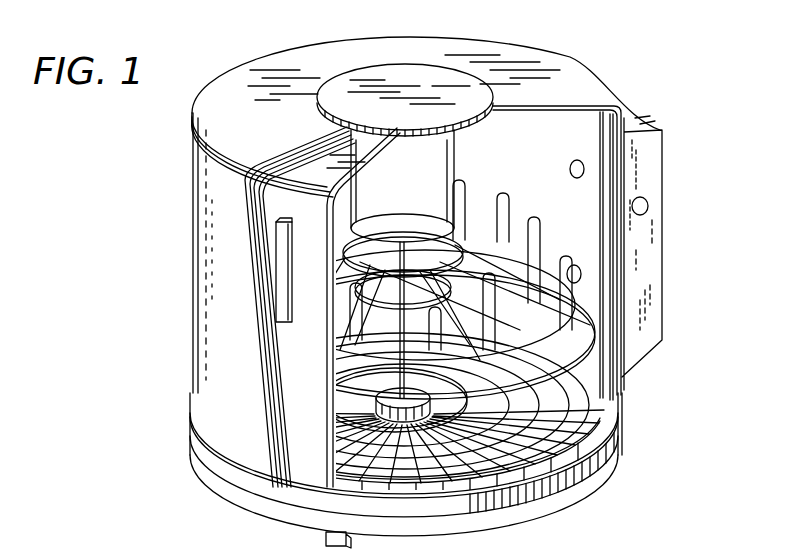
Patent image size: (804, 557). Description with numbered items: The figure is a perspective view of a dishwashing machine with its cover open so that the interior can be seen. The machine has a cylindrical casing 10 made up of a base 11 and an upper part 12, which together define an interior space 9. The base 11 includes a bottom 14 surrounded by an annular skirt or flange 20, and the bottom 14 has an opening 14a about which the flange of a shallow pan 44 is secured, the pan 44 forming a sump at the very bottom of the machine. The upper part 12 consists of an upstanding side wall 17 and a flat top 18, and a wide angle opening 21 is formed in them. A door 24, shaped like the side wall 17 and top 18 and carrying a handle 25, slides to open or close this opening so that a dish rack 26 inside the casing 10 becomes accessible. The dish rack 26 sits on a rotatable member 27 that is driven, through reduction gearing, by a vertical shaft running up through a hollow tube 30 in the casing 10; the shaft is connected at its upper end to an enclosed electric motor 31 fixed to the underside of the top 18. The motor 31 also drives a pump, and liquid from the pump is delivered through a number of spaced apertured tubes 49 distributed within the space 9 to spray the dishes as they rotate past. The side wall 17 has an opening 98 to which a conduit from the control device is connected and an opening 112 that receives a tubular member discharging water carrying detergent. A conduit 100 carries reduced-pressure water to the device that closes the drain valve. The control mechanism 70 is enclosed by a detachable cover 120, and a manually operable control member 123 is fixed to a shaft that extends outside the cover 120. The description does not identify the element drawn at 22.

The cylindrical casing 10 is at (190, 109).
The base 11 is at (224, 489).
The upper part 12 is at (619, 90).
The bottom 14 is at (413, 480).
The opening 14a is at (348, 420).
The side wall 17 is at (196, 318).
The flat top 18 is at (576, 70).
The annular skirt or flange 20 is at (297, 506).
The wide angle opening 21 is at (550, 122).
The strap band 22 is at (623, 152).
The door 24 is at (300, 167).
The handle 25 is at (290, 226).
The dish rack 26 is at (520, 216).
The rotatable member 27 is at (375, 390).
The hollow tube 30 is at (416, 297).
The electric motor 31 is at (455, 162).
The pan 44 is at (365, 412).
The apertured tubes 49 is at (600, 318).
The control mechanism 70 is at (666, 180).
The opening 98 is at (570, 265).
The conduit 100 is at (412, 544).
The opening 112 is at (574, 161).
The cover 120 is at (660, 285).
The manually operable control member 123 is at (650, 208).
The space 9 is at (524, 170).